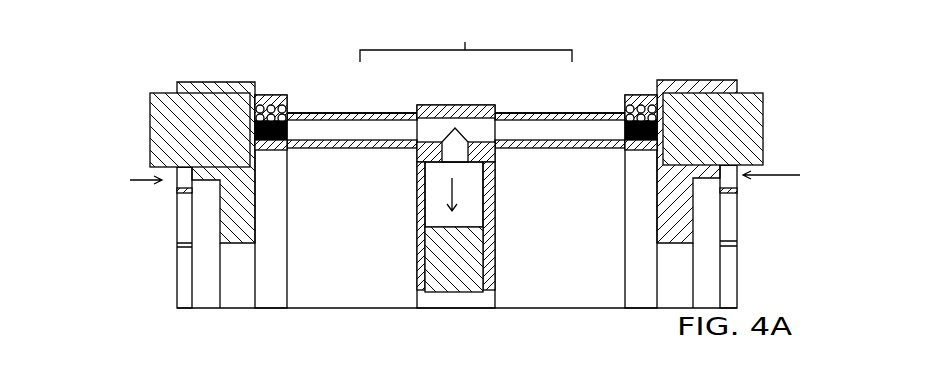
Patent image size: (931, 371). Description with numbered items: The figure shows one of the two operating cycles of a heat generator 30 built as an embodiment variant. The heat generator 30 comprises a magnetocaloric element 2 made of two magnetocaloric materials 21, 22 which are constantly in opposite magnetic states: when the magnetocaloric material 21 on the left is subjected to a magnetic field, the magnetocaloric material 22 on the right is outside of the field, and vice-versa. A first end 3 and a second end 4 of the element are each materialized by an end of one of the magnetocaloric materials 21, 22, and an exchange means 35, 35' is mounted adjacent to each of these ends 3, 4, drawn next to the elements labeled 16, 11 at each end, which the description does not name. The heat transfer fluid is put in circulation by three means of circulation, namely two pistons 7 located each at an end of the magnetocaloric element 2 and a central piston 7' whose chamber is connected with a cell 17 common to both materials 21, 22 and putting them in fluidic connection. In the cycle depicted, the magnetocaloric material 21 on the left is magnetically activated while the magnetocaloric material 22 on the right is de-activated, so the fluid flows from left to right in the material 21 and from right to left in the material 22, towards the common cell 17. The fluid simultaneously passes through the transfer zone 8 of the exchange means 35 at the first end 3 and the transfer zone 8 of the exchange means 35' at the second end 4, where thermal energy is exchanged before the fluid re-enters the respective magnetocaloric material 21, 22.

The heat generator 30 is at (94, 77).
The piston 7 is at (459, 102).
The piston 7' is at (461, 291).
The spring elements 16 is at (263, 106).
The sealing element 11 is at (473, 83).
The first end 3 is at (290, 128).
The second end 4 is at (622, 128).
The magnetocaloric element 2 is at (466, 37).
The magnetocaloric material 21 is at (348, 128).
The magnetocaloric material 22 is at (533, 130).
The transfer zone 8 is at (279, 144).
The cell 17 is at (437, 130).
The exchange means 35 is at (295, 213).
The exchange means 35' is at (610, 221).